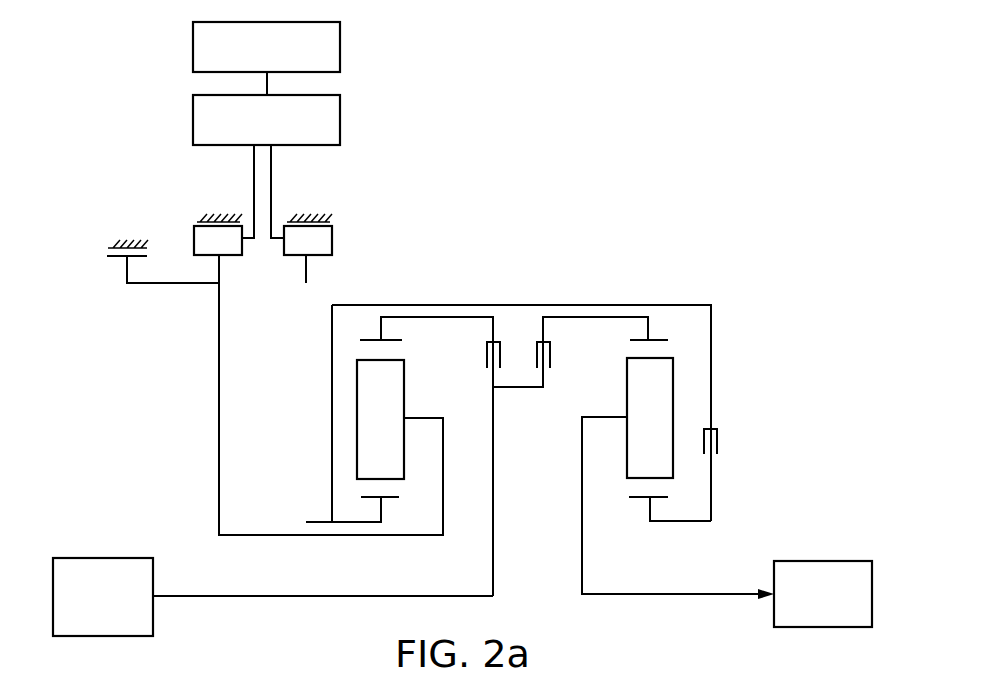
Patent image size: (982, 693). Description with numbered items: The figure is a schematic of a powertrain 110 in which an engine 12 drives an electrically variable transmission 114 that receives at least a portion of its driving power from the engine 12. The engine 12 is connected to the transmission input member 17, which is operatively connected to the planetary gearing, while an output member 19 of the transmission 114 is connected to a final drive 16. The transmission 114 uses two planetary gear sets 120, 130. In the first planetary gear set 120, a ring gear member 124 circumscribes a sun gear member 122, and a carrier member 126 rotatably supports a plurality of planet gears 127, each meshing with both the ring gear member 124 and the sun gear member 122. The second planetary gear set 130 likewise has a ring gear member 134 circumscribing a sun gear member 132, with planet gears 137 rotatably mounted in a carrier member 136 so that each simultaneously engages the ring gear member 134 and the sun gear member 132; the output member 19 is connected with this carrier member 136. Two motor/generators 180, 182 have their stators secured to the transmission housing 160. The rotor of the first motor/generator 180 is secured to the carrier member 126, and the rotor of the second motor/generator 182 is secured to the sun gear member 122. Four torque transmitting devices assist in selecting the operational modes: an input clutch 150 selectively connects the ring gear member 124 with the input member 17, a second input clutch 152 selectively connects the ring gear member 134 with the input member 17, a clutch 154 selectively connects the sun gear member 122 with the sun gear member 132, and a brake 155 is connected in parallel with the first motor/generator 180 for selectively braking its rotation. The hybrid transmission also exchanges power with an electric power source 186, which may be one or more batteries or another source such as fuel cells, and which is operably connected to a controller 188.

The engine 12 is at (120, 543).
The final drive 16 is at (807, 548).
The transmission input member 17 is at (190, 598).
The transmission output member 19 is at (736, 598).
The powertrain 110 is at (700, 130).
The electrically variable transmission 114 is at (743, 158).
The first planetary gear set 120 is at (372, 501).
The sun gear member 122 is at (384, 503).
The ring gear member 124 is at (372, 336).
The carrier member 126 is at (413, 408).
The planet gears 127 is at (380, 419).
The second planetary gear set 130 is at (641, 501).
The sun gear member 132 is at (654, 503).
The ring gear member 134 is at (646, 336).
The carrier member 136 is at (617, 408).
The planet gears 137 is at (650, 418).
The input clutch 150 is at (502, 334).
The input clutch 152 is at (552, 334).
The clutch 154 is at (721, 426).
The brake 155 is at (104, 249).
The transmission housing 160 is at (194, 218).
The first motor/generator 180 is at (190, 223).
The second motor/generator 182 is at (337, 223).
The electric power source 186 is at (193, 50).
The controller 188 is at (193, 120).